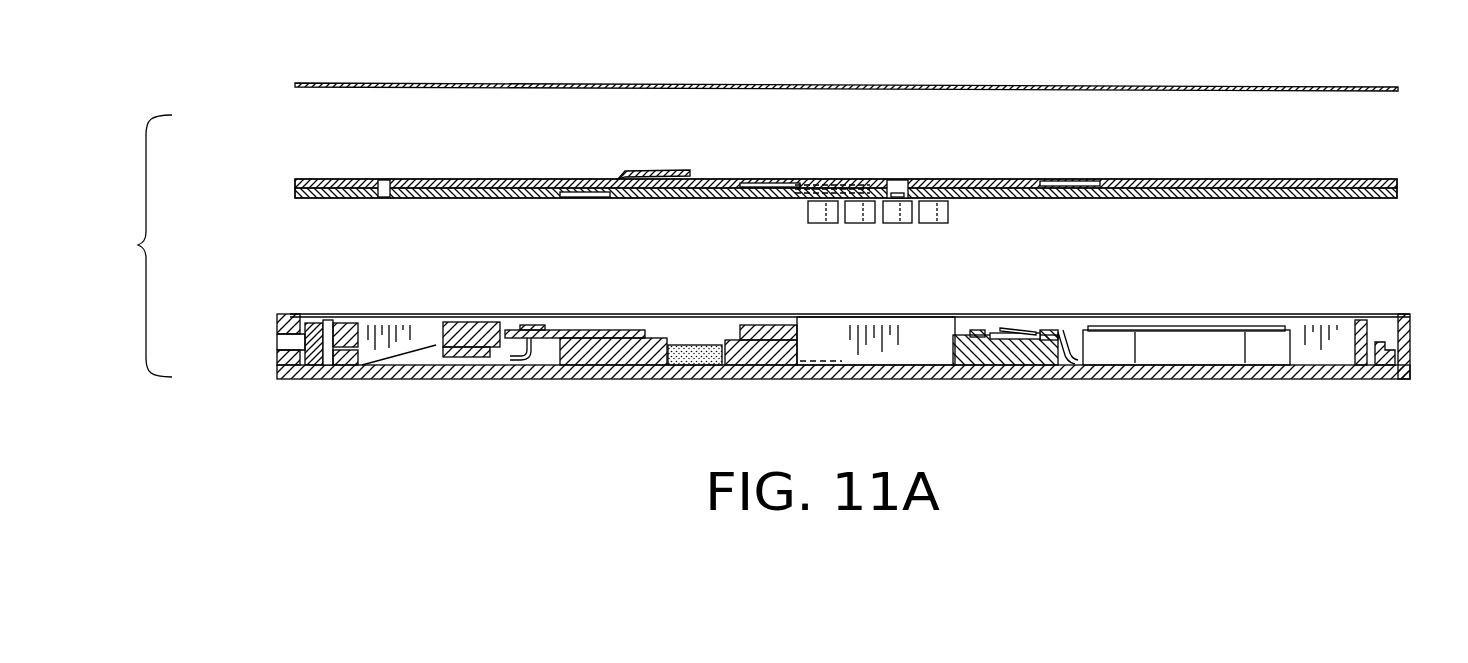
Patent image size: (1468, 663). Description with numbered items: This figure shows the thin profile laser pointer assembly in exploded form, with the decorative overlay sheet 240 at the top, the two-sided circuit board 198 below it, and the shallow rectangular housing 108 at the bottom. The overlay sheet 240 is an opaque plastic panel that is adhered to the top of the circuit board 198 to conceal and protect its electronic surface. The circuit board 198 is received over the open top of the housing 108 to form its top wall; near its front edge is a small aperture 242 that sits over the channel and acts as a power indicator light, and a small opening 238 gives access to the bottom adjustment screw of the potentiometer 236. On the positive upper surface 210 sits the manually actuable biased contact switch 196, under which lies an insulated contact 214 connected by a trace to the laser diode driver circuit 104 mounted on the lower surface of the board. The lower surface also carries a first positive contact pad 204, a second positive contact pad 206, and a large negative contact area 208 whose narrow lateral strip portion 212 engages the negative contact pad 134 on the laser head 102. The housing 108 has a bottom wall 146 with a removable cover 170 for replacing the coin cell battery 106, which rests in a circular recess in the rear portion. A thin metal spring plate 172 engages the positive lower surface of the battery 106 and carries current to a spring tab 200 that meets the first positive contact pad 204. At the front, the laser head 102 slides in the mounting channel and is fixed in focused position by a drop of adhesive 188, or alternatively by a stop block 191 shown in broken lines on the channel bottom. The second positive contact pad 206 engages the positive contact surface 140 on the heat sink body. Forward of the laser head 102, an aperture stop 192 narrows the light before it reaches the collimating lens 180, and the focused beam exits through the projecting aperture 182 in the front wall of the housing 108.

The overlay sheet 240 is at (1128, 88).
The circuit board 198 is at (1405, 187).
The aperture 242 is at (385, 181).
The contact switch 196 is at (656, 170).
The contact 214 is at (755, 181).
The opening 238 is at (905, 182).
The upper surface 210 is at (1094, 182).
The lateral strip portion 212 is at (590, 199).
The second positive contact pad 206 is at (745, 200).
The potentiometer 236 is at (893, 211).
The laser diode driver circuit 104 is at (925, 213).
The first positive contact pad 204 is at (1008, 199).
The negative contact area 208 is at (1100, 199).
The housing 108 is at (450, 382).
The laser head 102 is at (600, 382).
The projecting aperture 182 is at (278, 343).
The collimating lens 180 is at (328, 367).
The aperture stop 192 is at (348, 330).
The contact pad 134 is at (560, 330).
The bottom wall 146 is at (735, 380).
The adhesive 188 is at (695, 368).
The positive contact surface 140 is at (792, 325).
The stop block 191 is at (858, 378).
The spring tab 200 is at (1012, 330).
The spring plate 172 is at (1072, 332).
The coin cell battery 106 is at (1212, 331).
The removable cover 170 is at (1130, 380).